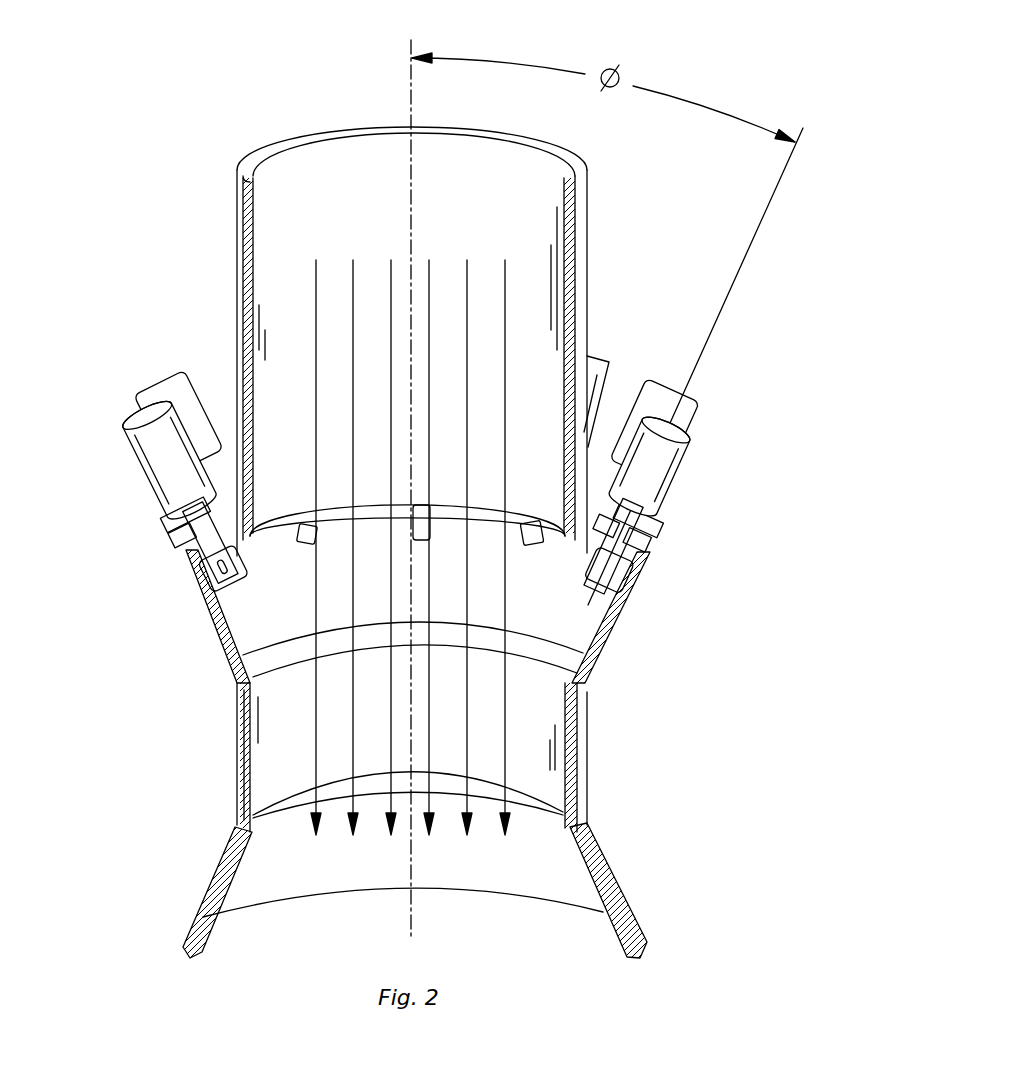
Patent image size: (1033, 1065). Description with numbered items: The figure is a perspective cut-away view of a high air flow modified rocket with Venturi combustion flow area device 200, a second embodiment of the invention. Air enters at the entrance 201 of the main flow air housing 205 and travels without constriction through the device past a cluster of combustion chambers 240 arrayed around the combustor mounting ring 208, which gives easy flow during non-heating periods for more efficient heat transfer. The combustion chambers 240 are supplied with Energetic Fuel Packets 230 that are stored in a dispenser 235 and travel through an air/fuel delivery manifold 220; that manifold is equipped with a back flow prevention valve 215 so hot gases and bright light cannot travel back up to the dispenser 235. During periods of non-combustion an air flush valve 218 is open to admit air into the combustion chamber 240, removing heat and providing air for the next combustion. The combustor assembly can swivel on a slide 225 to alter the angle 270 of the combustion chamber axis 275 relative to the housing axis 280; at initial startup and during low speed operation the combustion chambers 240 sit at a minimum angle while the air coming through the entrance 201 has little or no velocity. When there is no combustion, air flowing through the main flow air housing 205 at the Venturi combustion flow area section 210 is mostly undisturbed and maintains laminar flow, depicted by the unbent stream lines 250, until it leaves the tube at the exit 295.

The high air flow modified rocket with Venturi combustion flow area device 200 is at (180, 175).
The entrance 201 is at (273, 145).
The main flow air housing 205 is at (237, 298).
The combustor mounting ring 208 is at (190, 562).
The Venturi combustion flow area section 210 is at (587, 770).
The back flow prevention valve 215 is at (160, 518).
The air flush valve 218 is at (180, 540).
The air/fuel delivery manifold 220 is at (646, 527).
The slide 225 is at (630, 572).
The Energetic Fuel Packets 230 is at (172, 477).
The dispenser 235 is at (686, 458).
The combustion chambers 240 is at (205, 604).
The unbent stream lines 250 is at (312, 745).
The angle 270 is at (626, 62).
The combustion chamber axis 275 is at (690, 383).
The housing axis 280 is at (405, 105).
The tube exit 295 is at (300, 900).